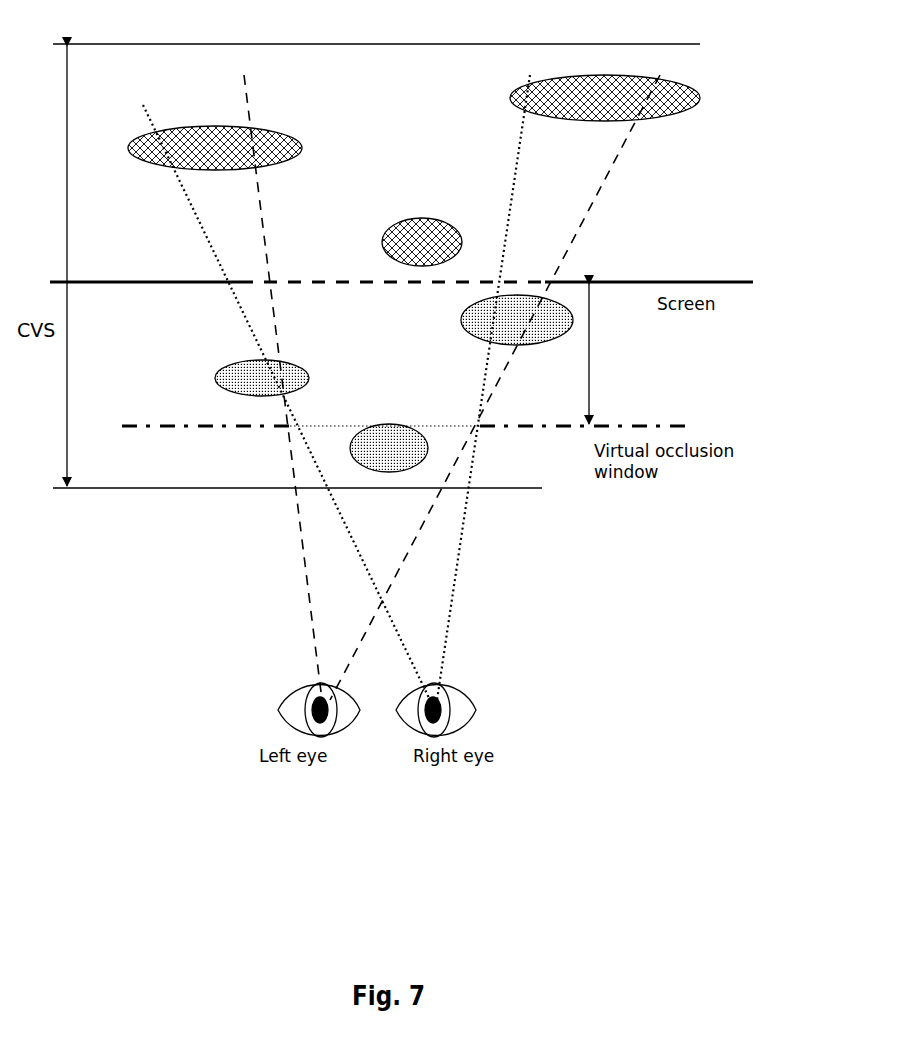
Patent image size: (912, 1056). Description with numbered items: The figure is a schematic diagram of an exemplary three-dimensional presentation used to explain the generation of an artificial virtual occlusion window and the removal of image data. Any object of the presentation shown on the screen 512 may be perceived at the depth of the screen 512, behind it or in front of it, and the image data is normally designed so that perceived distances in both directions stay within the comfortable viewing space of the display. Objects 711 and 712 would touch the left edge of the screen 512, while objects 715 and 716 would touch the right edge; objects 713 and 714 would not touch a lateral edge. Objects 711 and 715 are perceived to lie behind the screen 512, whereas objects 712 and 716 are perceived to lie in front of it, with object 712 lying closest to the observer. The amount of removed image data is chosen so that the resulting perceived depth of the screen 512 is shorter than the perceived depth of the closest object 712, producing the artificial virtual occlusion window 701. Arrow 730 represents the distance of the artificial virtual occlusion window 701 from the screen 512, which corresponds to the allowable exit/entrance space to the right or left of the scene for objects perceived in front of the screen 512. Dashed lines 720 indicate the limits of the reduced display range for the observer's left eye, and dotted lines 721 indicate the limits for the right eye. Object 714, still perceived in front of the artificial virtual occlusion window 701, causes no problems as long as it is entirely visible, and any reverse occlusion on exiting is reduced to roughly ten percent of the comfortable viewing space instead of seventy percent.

The screen 512 is at (303, 279).
The artificial virtual occlusion window 701 is at (438, 424).
The object 711 is at (301, 147).
The object 712 is at (216, 378).
The object 713 is at (431, 219).
The object 714 is at (384, 426).
The object 715 is at (700, 100).
The object 716 is at (462, 320).
The dashed lines 720 is at (576, 242).
The dotted lines 721 is at (512, 213).
The arrow 730 is at (590, 368).